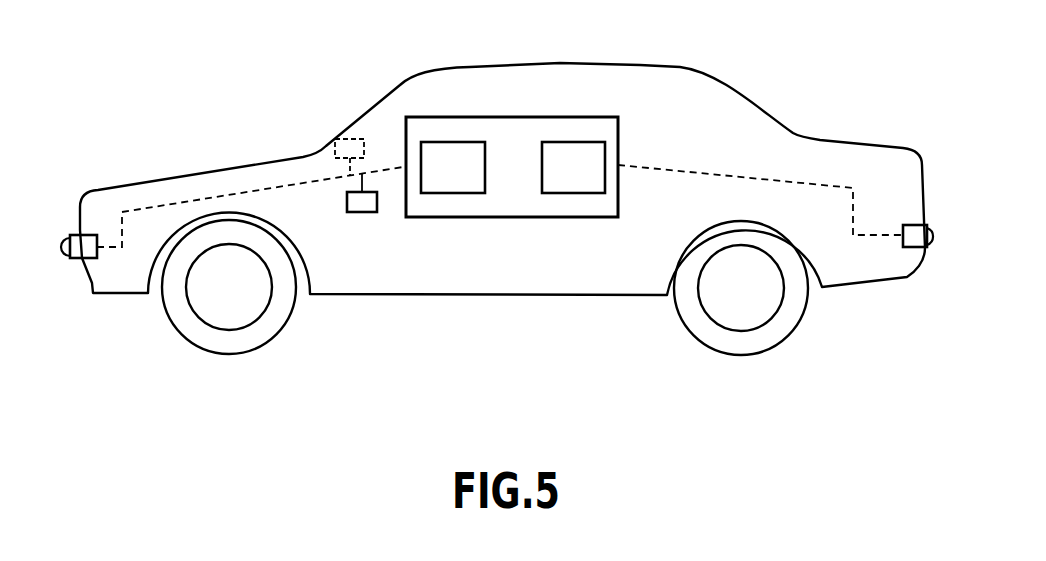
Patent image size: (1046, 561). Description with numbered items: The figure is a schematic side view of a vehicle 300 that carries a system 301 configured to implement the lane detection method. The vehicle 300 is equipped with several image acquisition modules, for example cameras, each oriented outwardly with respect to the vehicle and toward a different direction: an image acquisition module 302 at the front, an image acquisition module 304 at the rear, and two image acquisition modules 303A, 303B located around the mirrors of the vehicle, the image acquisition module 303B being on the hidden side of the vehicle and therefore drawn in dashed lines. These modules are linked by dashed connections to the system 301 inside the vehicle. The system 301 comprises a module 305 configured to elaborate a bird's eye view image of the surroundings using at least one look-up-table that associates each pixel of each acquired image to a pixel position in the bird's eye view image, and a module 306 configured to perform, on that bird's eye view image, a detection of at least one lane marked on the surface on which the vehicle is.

The vehicle 300 is at (578, 63).
The system 301 is at (488, 117).
The image acquisition module 302 is at (87, 253).
The image acquisition module 303A is at (360, 211).
The image acquisition module 303B is at (327, 145).
The image acquisition module 304 is at (902, 228).
The module configured to elaborate a bird's eye view image 305 is at (453, 167).
The module configured to perform lane detection 306 is at (573, 167).